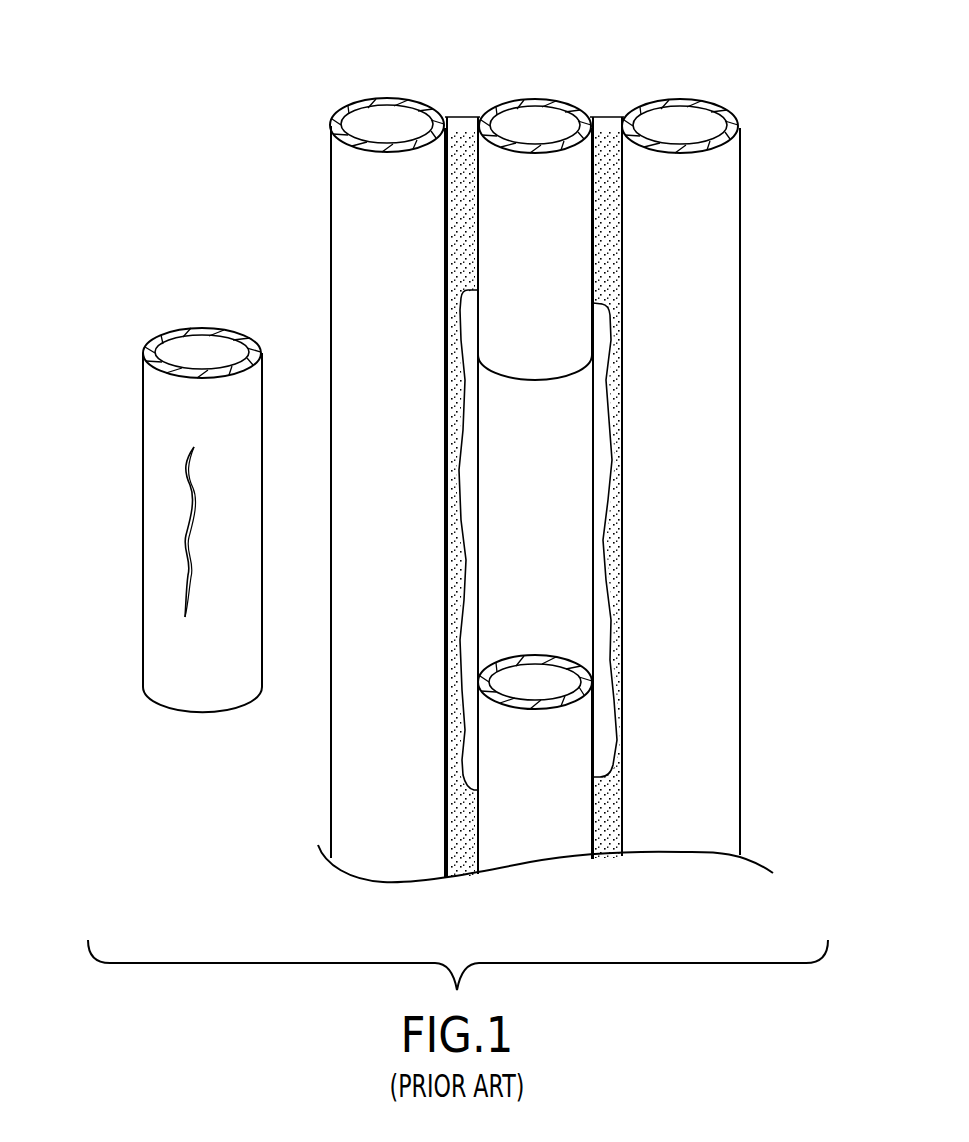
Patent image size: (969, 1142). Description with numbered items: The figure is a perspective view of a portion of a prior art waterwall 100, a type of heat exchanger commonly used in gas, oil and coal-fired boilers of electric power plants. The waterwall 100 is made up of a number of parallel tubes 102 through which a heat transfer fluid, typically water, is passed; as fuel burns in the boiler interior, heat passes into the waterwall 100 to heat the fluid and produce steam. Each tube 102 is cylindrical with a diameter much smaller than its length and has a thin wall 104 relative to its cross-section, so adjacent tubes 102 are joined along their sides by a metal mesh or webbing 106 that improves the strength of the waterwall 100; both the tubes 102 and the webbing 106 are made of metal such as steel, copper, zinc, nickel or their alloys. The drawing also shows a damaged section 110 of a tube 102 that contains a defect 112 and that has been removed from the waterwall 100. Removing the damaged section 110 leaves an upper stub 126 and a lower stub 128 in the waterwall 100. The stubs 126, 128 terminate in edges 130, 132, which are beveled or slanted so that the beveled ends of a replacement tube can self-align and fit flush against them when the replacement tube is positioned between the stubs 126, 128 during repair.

The waterwall 100 is at (292, 78).
The tube 102 is at (713, 257).
The wall 104 is at (735, 103).
The webbing 106 is at (605, 120).
The damaged section 110 is at (115, 408).
The defect 112 is at (183, 578).
The stub 126 is at (513, 175).
The stub 128 is at (528, 850).
The edge 130 is at (538, 394).
The edge 132 is at (530, 641).